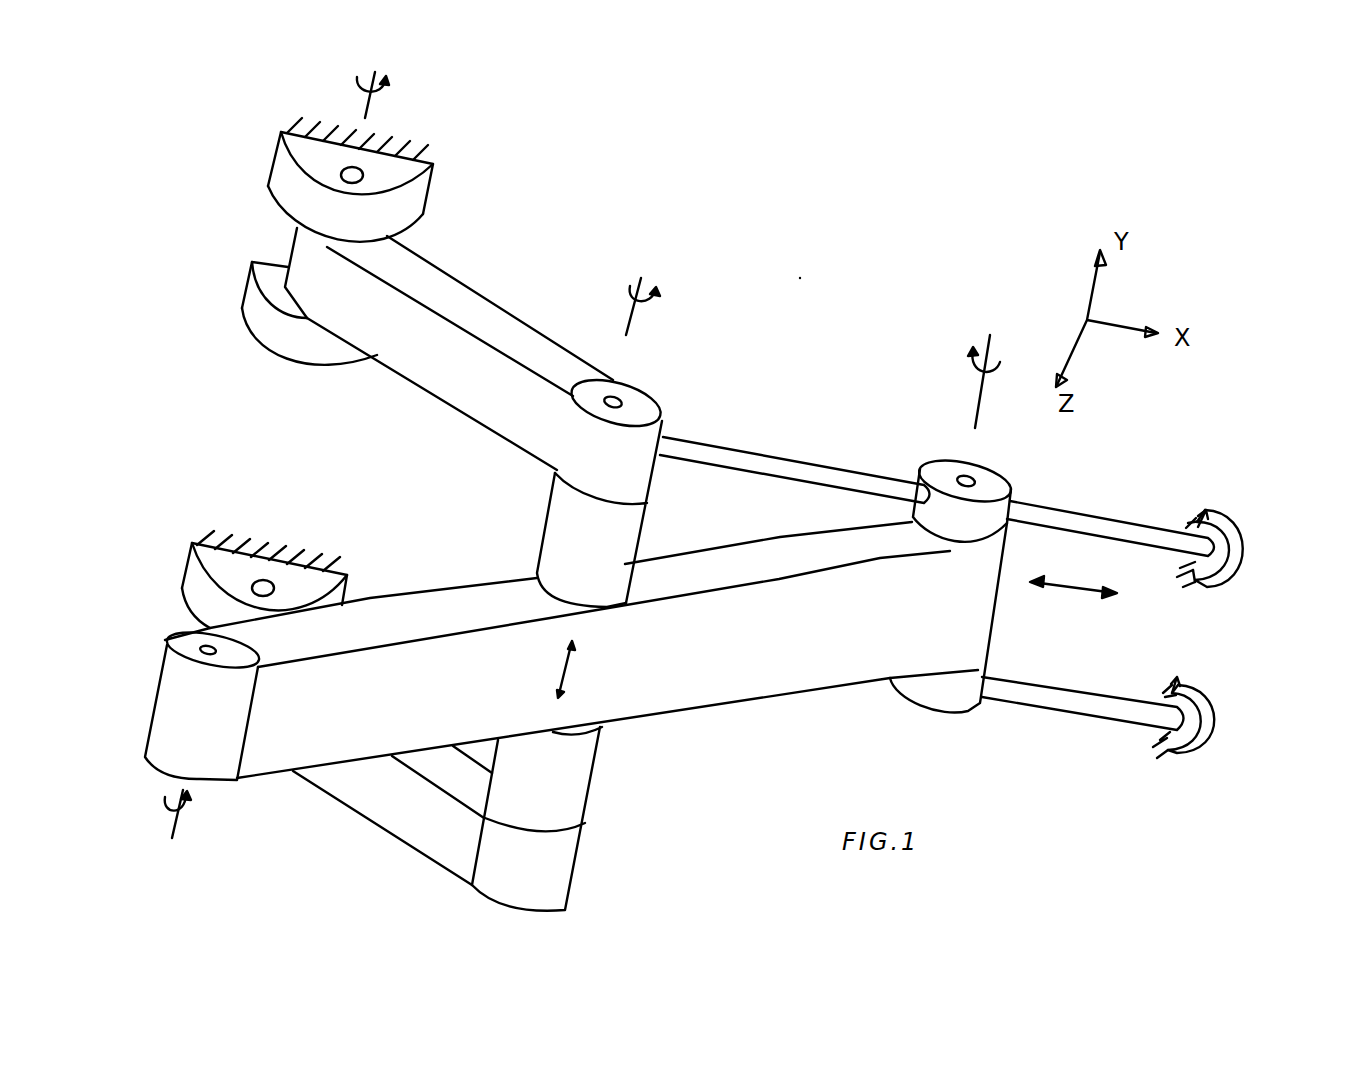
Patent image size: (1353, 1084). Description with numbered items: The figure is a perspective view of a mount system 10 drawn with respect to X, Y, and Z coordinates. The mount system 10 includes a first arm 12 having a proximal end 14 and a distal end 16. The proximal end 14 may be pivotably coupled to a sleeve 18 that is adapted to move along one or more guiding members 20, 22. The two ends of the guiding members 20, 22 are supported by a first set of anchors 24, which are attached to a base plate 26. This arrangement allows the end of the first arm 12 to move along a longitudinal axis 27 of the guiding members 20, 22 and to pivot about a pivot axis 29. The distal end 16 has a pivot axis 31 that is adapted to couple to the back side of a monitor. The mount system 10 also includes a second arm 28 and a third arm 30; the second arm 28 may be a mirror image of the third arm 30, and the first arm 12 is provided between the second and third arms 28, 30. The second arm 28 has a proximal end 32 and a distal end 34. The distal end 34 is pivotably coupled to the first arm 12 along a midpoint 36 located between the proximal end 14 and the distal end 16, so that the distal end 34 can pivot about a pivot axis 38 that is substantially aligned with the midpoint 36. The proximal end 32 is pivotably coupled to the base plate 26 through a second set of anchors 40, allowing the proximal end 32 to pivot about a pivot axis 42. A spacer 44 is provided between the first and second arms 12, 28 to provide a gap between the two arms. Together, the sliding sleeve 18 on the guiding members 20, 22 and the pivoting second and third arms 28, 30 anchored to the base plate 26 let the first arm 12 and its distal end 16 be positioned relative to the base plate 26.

The mount system 10 is at (748, 327).
The first arm 12 is at (770, 667).
The proximal end 14 is at (980, 603).
The distal end 16 is at (232, 773).
The sleeve 18 is at (993, 483).
The guiding member 20 is at (1147, 530).
The guiding member 22 is at (1120, 700).
The first set of anchors 24 is at (1240, 530).
The base plate 26 is at (433, 143).
The longitudinal axis 27 is at (1070, 580).
The second arm 28 is at (483, 318).
The pivot axis 29 is at (980, 378).
The third arm 30 is at (398, 815).
The pivot axis 31 is at (170, 810).
The proximal end 32 is at (302, 253).
The distal end 34 is at (647, 405).
The midpoint 36 is at (565, 672).
The pivot axis 38 is at (633, 322).
The second set of anchors 40 is at (277, 167).
The pivot axis 42 is at (365, 105).
The spacer 44 is at (557, 530).